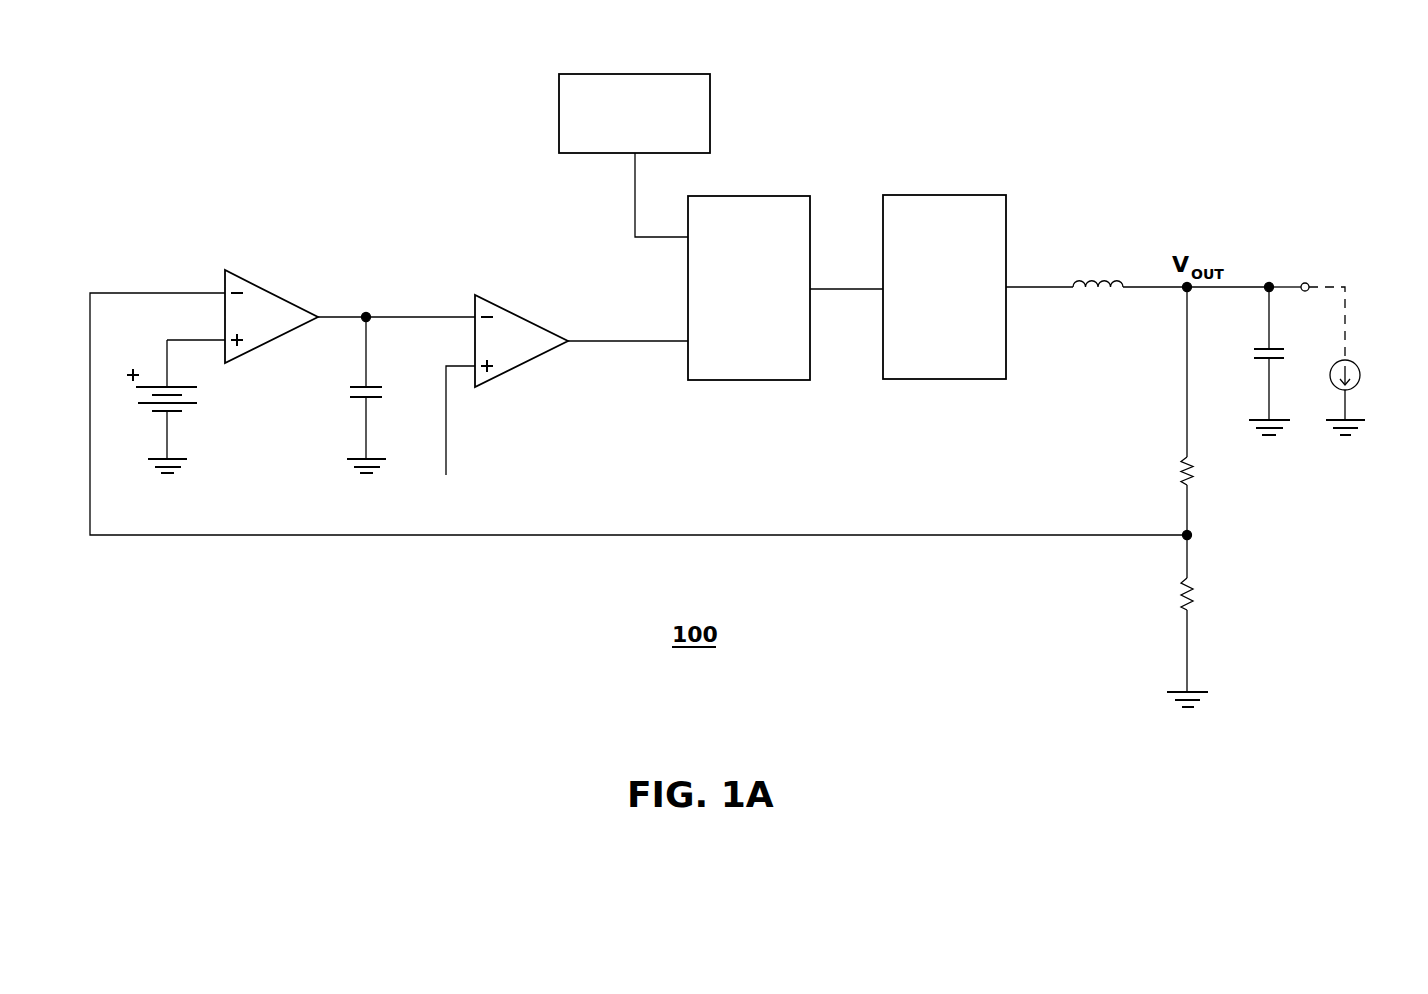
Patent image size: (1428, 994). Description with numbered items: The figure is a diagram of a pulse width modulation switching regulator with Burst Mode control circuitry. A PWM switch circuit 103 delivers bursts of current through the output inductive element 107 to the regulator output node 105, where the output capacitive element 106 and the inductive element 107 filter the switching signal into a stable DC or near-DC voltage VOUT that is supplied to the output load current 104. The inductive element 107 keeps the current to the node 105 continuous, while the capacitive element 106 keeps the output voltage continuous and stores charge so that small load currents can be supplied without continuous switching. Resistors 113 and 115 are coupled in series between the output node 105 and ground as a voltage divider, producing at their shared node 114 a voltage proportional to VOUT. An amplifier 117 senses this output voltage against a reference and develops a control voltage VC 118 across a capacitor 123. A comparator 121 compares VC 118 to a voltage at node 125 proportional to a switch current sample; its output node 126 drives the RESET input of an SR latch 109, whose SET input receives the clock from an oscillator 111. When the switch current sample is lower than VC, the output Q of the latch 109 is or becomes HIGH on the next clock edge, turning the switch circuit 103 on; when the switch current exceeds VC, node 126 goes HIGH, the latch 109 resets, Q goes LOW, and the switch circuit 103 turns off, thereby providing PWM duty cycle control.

The switch circuit 103 is at (942, 195).
The output load current 104 is at (1360, 375).
The regulator output node 105 is at (1136, 286).
The output capacitive element 106 is at (1262, 357).
The output inductive element 107 is at (1092, 292).
The SR latch 109 is at (770, 381).
The clock oscillator 111 is at (710, 113).
The resistor 113 is at (1173, 470).
The shared node 114 is at (1195, 535).
The resistor 115 is at (1173, 600).
The amplifier 117 is at (277, 287).
The control voltage VC 118 is at (444, 312).
The comparator 121 is at (526, 318).
The capacitor 123 is at (356, 388).
The switch current sample node 125 is at (447, 462).
The comparator output node 126 is at (650, 343).